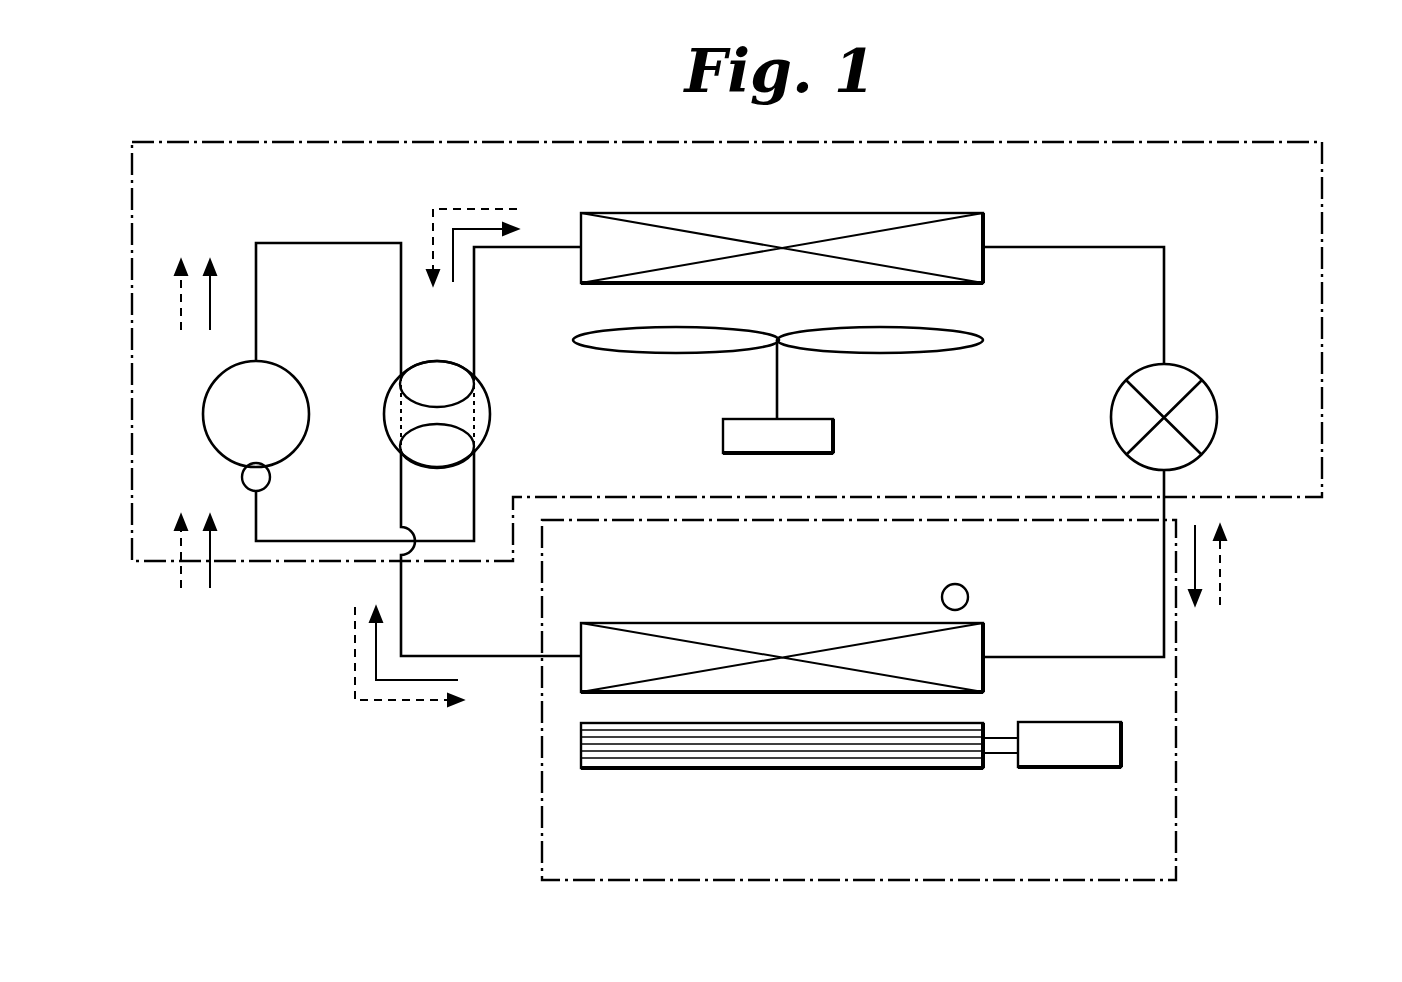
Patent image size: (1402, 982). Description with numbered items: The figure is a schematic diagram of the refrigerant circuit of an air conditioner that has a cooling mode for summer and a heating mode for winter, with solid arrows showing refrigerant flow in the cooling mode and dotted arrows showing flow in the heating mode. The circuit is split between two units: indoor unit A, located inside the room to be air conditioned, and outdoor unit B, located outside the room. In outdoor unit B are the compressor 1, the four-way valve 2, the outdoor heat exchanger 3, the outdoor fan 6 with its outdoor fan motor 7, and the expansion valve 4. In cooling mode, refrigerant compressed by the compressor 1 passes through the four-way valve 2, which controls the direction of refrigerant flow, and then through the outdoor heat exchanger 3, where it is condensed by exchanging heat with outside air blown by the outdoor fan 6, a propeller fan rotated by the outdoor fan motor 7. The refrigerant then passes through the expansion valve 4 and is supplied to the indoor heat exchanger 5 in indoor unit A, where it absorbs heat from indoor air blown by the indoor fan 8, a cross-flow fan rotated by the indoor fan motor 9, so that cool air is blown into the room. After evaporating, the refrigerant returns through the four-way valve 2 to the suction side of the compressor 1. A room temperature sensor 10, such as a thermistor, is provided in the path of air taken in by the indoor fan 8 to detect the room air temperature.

The compressor 1 is at (296, 373).
The four-way valve 2 is at (486, 400).
The outdoor heat exchanger 3 is at (778, 213).
The expansion valve 4 is at (1190, 373).
The indoor heat exchanger 5 is at (780, 623).
The outdoor fan 6 is at (970, 332).
The outdoor fan motor 7 is at (835, 432).
The indoor fan 8 is at (783, 770).
The indoor fan motor 9 is at (1075, 722).
The room temperature sensor 10 is at (953, 584).
The indoor unit A is at (1160, 698).
The outdoor unit B is at (1308, 222).